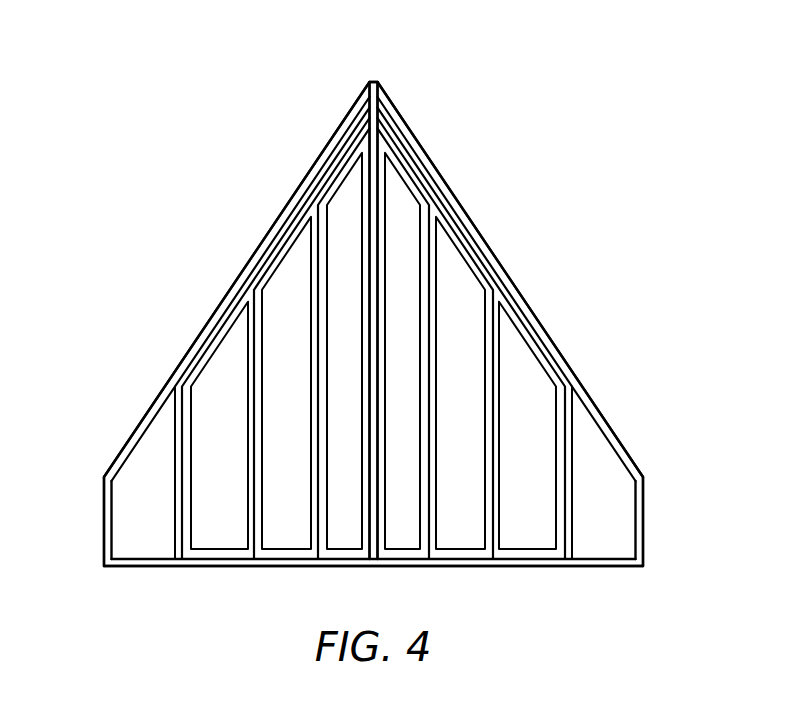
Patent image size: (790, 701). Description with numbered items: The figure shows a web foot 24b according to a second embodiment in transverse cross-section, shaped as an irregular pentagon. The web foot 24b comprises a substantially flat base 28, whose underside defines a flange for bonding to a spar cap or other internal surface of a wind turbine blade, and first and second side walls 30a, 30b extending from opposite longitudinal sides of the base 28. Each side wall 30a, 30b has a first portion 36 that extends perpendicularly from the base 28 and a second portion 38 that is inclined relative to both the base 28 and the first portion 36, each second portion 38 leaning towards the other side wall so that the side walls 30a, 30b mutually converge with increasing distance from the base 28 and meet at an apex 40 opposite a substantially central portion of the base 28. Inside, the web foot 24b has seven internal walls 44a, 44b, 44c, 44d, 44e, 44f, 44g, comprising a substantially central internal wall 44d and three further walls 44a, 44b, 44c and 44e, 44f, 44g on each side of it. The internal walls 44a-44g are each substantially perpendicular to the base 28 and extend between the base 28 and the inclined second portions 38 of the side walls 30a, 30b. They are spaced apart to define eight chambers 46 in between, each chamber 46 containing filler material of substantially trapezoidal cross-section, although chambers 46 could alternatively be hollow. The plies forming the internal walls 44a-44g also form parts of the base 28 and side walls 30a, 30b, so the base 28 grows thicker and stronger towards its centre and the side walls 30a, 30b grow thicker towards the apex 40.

The web foot 24b is at (152, 181).
The base 28 is at (126, 568).
The first side wall 30a is at (236, 282).
The second side wall 30b is at (511, 282).
The first portion 36 is at (101, 514).
The second portion 38 is at (291, 198).
The apex 40 is at (372, 80).
The internal wall 44a is at (187, 513).
The internal wall 44b is at (258, 513).
The internal wall 44c is at (320, 513).
The central internal wall 44d is at (380, 513).
The internal wall 44e is at (432, 513).
The internal wall 44f is at (492, 513).
The internal wall 44g is at (568, 513).
The chamber 46 is at (323, 347).